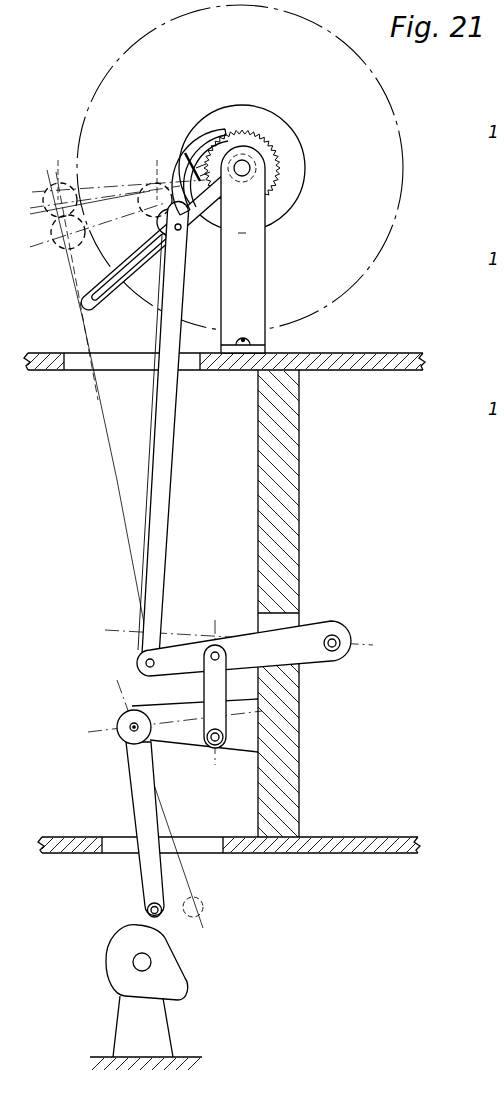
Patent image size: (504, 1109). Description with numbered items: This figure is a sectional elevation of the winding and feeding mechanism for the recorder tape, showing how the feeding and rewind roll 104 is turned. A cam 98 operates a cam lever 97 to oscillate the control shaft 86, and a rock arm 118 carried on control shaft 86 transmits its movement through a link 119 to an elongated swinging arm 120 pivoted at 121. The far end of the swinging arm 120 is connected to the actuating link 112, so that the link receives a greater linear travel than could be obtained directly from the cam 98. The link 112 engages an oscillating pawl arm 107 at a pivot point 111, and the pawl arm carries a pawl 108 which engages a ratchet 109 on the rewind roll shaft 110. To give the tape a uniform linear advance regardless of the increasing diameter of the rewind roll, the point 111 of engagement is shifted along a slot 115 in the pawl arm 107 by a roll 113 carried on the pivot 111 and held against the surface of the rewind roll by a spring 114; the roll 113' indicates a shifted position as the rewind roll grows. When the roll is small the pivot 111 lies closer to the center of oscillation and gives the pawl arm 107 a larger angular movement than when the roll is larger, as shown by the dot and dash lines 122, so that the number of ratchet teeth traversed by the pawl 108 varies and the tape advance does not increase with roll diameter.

The control shaft 86 is at (120, 727).
The cam lever 97 is at (136, 803).
The cam 98 is at (175, 958).
The feeding and rewind roll 104 is at (295, 150).
The pawl arm 107 is at (143, 250).
The pawl 108 is at (195, 147).
The ratchet 109 is at (260, 138).
The rewind roll shaft 110 is at (250, 170).
The pivot point 111 is at (186, 244).
The actuating link 112 is at (183, 436).
The roll 113 is at (117, 220).
The roller (alternate position) 113' is at (53, 248).
The spring 114 is at (182, 157).
The slot 115 is at (114, 286).
The rock arm 118 is at (193, 745).
The link 119 is at (206, 686).
The elongated swinging arm 120 is at (242, 645).
The pivot 121 is at (338, 637).
The dot and dash lines 122 is at (112, 72).